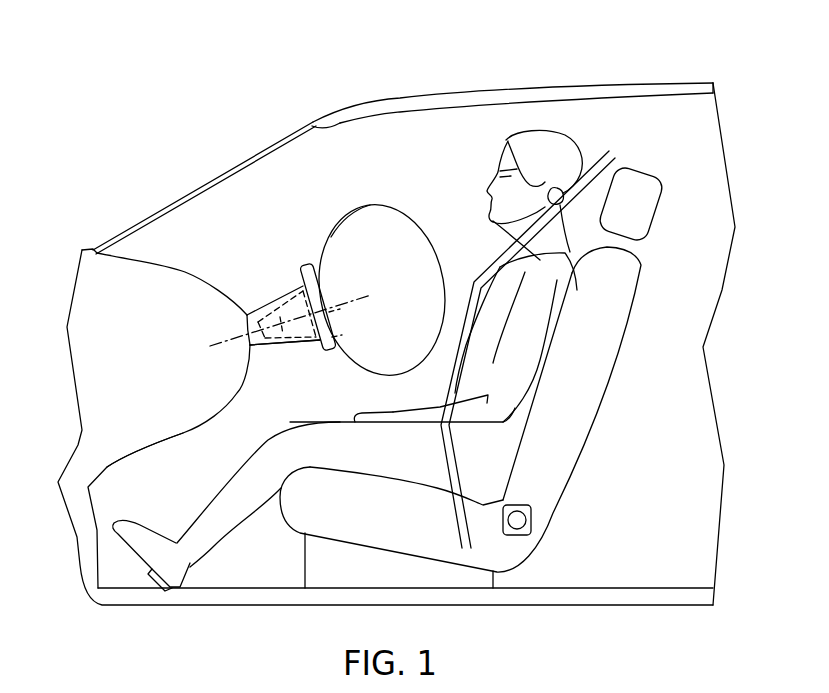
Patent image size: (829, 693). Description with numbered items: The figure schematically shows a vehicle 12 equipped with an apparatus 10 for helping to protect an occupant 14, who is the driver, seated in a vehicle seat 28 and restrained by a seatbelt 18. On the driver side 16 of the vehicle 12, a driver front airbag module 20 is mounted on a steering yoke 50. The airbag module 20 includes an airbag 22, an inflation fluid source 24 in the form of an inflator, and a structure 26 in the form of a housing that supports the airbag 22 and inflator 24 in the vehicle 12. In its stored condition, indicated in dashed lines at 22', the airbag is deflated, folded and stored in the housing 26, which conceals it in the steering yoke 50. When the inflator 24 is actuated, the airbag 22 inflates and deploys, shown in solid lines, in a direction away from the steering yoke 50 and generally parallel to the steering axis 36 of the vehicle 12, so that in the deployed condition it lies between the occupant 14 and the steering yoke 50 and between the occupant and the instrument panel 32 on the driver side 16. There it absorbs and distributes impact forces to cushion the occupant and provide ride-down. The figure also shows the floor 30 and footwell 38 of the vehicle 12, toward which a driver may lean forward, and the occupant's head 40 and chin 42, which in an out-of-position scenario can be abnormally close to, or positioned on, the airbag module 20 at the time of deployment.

The apparatus 10 is at (190, 200).
The vehicle 12 is at (160, 108).
The occupant 14 is at (448, 223).
The driver side 16 is at (398, 73).
The seatbelt 18 is at (572, 200).
The driver front airbag module 20 is at (255, 283).
The airbag 22 is at (307, 172).
The stored condition of the airbag 22' is at (296, 356).
The inflation fluid source 24 is at (273, 340).
The structure 26 is at (283, 300).
The vehicle seat 28 is at (590, 337).
The floor 30 is at (288, 597).
The instrument panel 32 is at (212, 382).
The steering axis 36 is at (213, 347).
The footwell 38 is at (173, 490).
The head 40 is at (540, 152).
The chin 42 is at (481, 224).
The steering yoke 50 is at (303, 263).